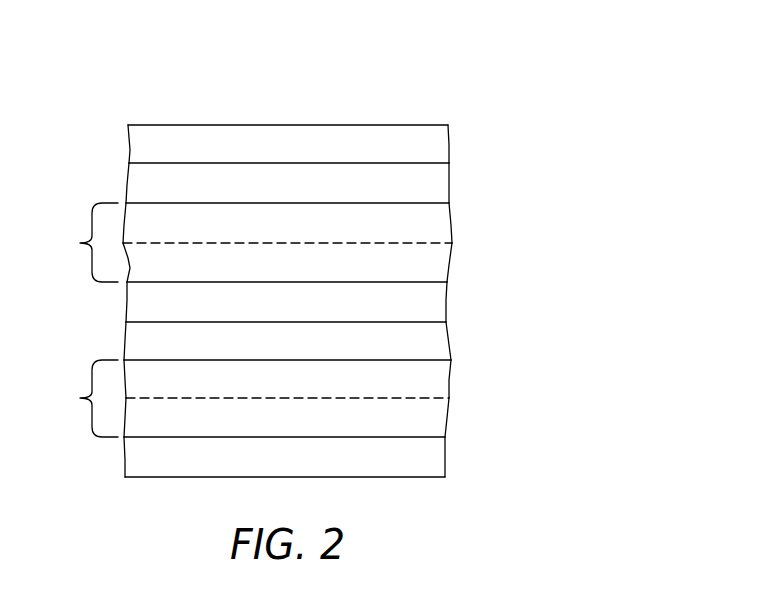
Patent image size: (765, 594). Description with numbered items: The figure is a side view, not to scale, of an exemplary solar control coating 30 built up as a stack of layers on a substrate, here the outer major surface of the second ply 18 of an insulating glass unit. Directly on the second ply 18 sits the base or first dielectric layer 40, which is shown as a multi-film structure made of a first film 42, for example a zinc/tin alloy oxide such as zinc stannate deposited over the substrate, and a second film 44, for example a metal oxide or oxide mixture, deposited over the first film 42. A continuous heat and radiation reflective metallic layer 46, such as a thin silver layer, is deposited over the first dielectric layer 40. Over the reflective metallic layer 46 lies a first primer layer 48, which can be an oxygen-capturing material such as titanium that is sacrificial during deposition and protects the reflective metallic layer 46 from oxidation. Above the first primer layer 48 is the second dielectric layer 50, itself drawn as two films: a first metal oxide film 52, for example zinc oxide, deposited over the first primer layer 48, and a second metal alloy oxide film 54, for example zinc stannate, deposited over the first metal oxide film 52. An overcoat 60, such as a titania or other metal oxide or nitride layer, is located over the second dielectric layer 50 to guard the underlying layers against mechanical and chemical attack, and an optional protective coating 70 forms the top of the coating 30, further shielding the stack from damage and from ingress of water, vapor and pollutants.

The solar control coating 30 is at (489, 91).
The protective coating 70 is at (442, 142).
The overcoat 60 is at (442, 184).
The second metal alloy oxide film 54 is at (437, 223).
The first metal oxide film 52 is at (443, 267).
The second dielectric layer 50 is at (85, 242).
The first primer layer 48 is at (440, 301).
The reflective metallic layer 46 is at (440, 342).
The second film 44 is at (442, 380).
The first film 42 is at (438, 418).
The first dielectric layer 40 is at (85, 398).
The second ply 18 is at (435, 460).